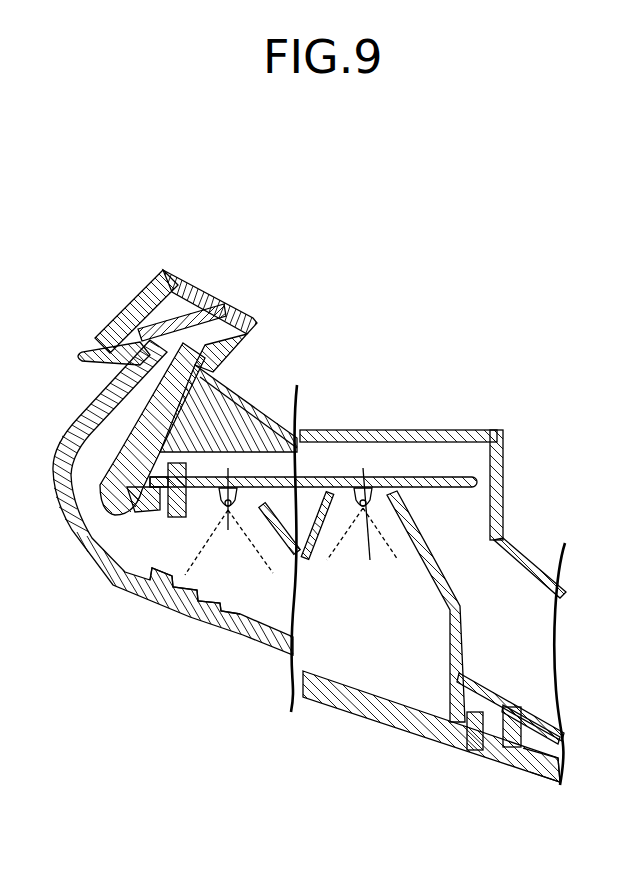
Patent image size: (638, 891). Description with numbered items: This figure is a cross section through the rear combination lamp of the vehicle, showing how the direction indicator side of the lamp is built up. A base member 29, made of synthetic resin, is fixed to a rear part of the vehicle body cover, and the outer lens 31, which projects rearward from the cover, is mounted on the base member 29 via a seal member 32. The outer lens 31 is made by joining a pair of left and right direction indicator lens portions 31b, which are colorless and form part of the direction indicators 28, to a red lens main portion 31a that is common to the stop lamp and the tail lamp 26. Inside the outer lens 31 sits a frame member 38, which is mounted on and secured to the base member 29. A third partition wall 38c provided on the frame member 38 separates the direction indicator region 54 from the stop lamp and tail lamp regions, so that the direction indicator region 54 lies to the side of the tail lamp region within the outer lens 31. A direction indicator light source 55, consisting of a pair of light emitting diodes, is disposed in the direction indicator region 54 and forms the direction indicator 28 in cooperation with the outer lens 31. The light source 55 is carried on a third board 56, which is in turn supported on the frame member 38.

The tail lamp 26 is at (510, 773).
The direction indicators 28 is at (223, 637).
The base member 29 is at (400, 428).
The outer lens 31 is at (113, 587).
The lens main portion 31a is at (540, 782).
The direction indicator lens portions 31b is at (377, 713).
The seal member 32 is at (140, 290).
The frame member 38 is at (507, 688).
The third partition walls 38c is at (462, 622).
The direction indicator regions 54 is at (291, 537).
The direction indicator light sources 55 is at (220, 512).
The third board 56 is at (458, 476).